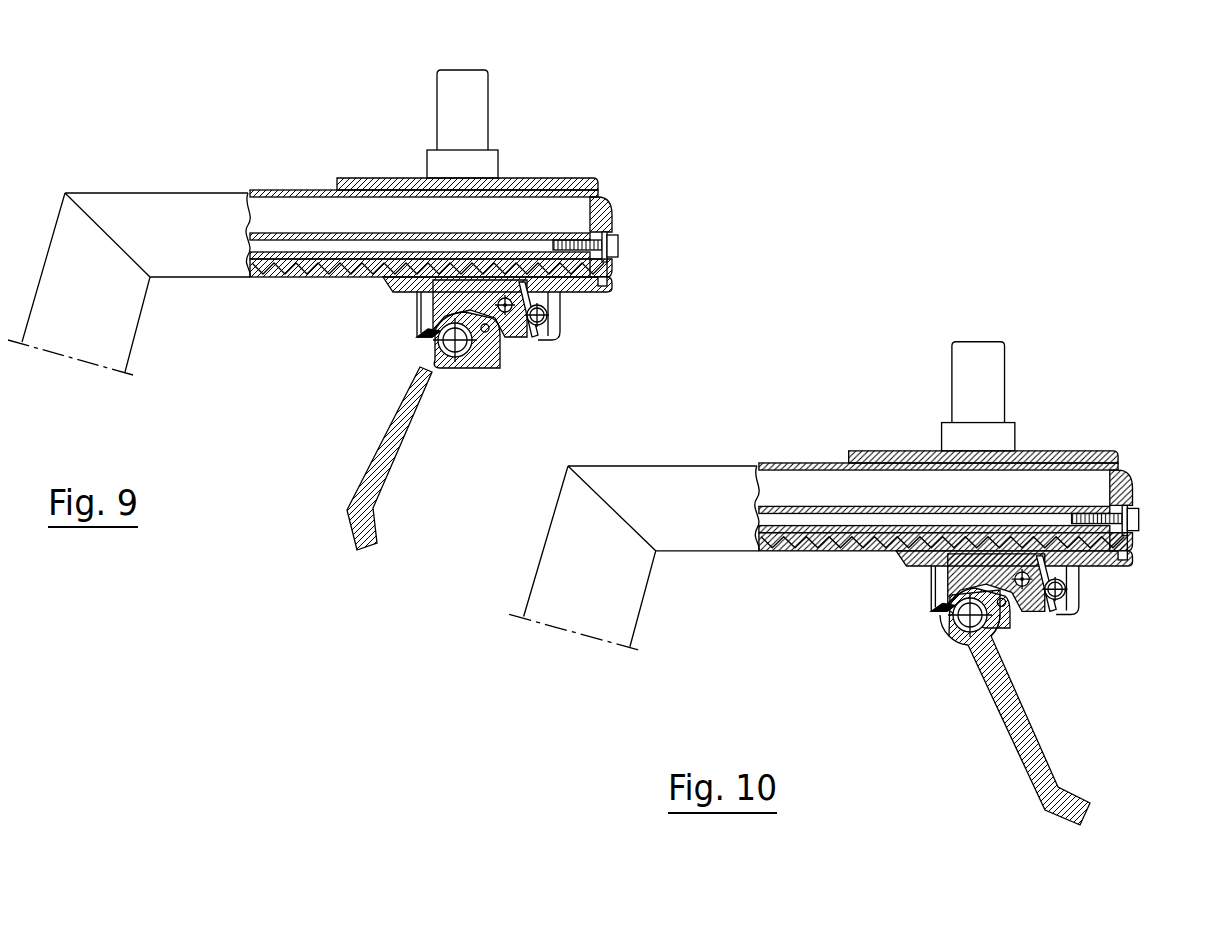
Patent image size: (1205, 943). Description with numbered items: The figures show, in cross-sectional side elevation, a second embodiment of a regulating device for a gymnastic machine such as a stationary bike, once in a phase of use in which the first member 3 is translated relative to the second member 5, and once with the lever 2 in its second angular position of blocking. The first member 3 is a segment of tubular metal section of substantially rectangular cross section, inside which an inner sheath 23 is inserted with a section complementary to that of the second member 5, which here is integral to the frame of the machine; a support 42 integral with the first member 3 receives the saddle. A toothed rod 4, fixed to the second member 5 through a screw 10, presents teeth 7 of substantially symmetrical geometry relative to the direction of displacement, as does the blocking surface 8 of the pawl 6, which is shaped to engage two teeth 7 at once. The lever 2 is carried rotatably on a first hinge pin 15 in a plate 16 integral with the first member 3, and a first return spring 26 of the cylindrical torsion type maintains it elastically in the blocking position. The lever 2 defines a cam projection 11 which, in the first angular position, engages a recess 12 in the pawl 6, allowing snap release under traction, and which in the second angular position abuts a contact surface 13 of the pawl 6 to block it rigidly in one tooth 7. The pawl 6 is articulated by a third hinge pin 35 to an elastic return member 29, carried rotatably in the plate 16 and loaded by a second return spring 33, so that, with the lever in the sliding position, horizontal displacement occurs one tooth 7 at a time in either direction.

In FIG. 9, the lever 2 is at (378, 468).
In FIG. 10, the lever 2 is at (1010, 728).
In FIG. 9, the first member 3 is at (587, 158).
In FIG. 10, the first member 3 is at (1105, 432).
In FIG. 9, the toothed rod 4 is at (607, 276).
In FIG. 10, the toothed rod 4 is at (1127, 553).
In FIG. 9, the second member 5 is at (182, 168).
In FIG. 10, the second member 5 is at (708, 447).
In FIG. 9, the pawl 6 is at (433, 295).
In FIG. 10, the pawl 6 is at (963, 562).
In FIG. 9, the teeth 7 is at (318, 278).
In FIG. 10, the teeth 7 is at (827, 553).
In FIG. 9, the blocking surface 8 is at (440, 260).
In FIG. 9, the screw 10 is at (618, 245).
In FIG. 9, the cam projection 11 is at (490, 372).
In FIG. 10, the cam projection 11 is at (1000, 597).
In FIG. 10, the recess 12 is at (1017, 620).
In FIG. 9, the contact surface 13 is at (422, 338).
In FIG. 10, the first hinge pin 15 is at (958, 633).
In FIG. 9, the plate 16 is at (580, 297).
In FIG. 9, the inner sheath 23 is at (543, 205).
In FIG. 9, the first return spring 26 is at (460, 367).
In FIG. 9, the elastic return member 29 is at (558, 318).
In FIG. 10, the elastic return member 29 is at (1070, 580).
In FIG. 9, the second return spring 33 is at (522, 337).
In FIG. 10, the third hinge pin 35 is at (1030, 572).
In FIG. 9, the support 42 is at (457, 102).
In FIG. 10, the support 42 is at (968, 375).